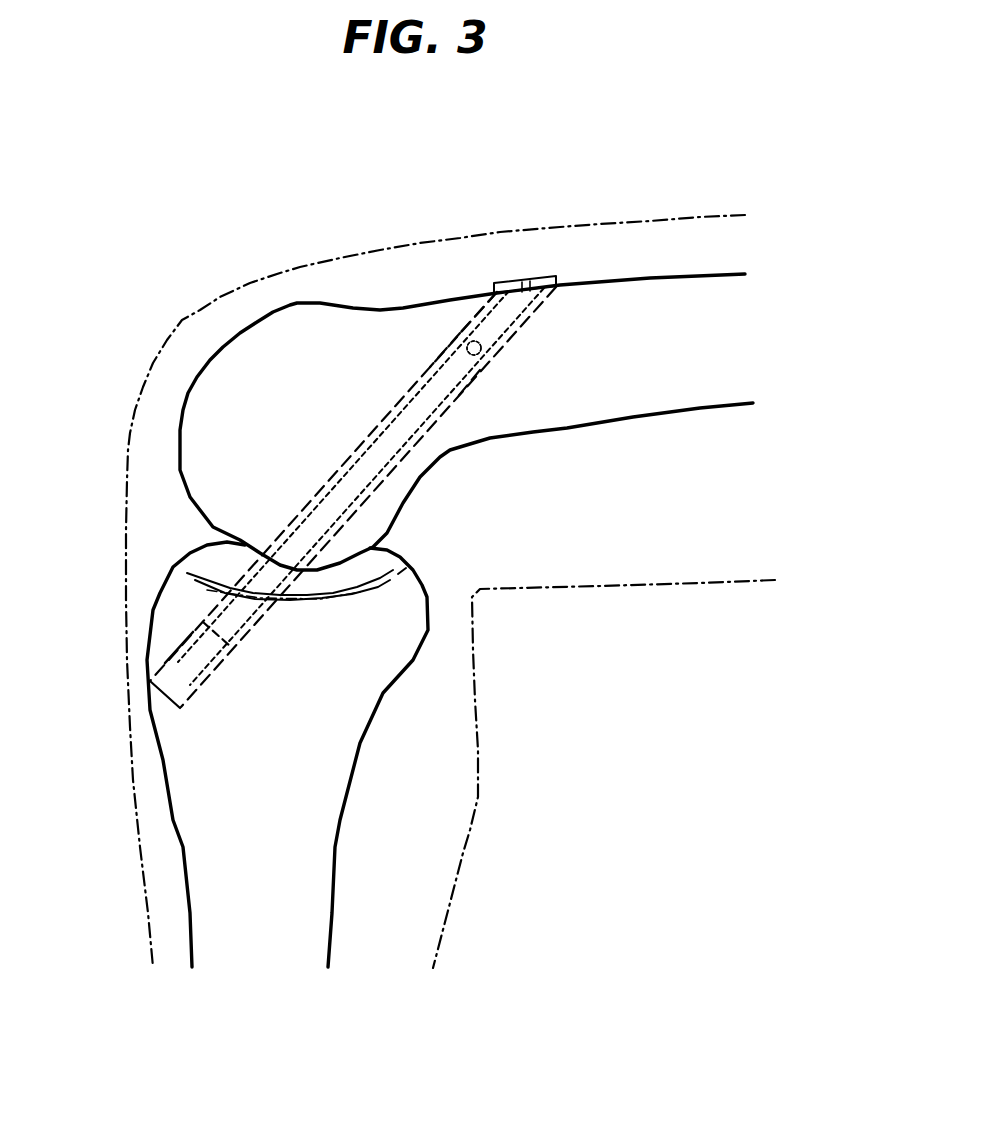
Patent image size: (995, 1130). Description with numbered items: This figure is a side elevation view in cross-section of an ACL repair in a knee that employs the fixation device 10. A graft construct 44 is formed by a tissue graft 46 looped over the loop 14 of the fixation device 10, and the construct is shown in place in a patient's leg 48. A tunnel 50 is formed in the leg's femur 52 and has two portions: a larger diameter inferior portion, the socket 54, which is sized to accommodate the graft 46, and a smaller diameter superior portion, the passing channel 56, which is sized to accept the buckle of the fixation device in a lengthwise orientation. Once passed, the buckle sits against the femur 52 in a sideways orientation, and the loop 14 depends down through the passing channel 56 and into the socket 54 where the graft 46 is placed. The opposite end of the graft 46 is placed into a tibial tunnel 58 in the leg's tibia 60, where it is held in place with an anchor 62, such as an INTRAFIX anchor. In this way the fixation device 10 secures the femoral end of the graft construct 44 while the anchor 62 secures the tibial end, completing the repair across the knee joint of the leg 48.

The fixation device 10 is at (562, 260).
The loop 14 is at (593, 385).
The graft construct 44 is at (416, 247).
The tissue graft 46 is at (461, 391).
The patient's leg 48 is at (203, 262).
The tunnel 50 is at (282, 492).
The femur 52 is at (566, 430).
The socket 54 is at (428, 365).
The passing channel 56 is at (476, 336).
The tibial tunnel 58 is at (329, 670).
The tibia 60 is at (355, 762).
The anchor 62 is at (116, 707).